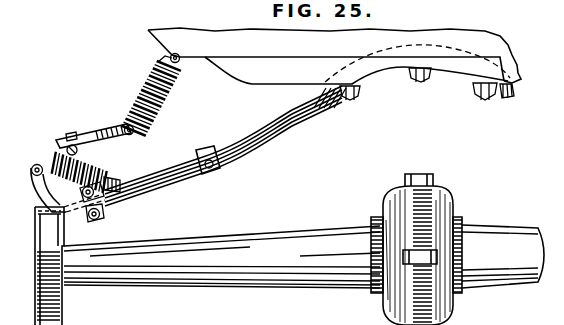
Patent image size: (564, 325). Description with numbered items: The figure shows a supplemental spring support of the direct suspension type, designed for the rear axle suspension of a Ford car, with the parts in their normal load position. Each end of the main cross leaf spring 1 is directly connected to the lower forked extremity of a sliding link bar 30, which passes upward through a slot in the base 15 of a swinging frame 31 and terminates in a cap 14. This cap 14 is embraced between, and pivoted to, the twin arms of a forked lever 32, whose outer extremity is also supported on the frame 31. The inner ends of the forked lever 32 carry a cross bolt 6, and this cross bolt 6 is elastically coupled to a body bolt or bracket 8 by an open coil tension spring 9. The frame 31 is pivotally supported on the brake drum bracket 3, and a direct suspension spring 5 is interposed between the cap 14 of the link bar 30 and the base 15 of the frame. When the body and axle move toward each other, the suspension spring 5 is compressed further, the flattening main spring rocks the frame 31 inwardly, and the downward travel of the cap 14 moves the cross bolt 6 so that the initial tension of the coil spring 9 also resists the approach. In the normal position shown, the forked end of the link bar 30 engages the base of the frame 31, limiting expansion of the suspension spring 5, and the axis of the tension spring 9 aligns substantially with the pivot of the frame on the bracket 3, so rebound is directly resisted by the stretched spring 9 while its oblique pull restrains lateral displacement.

The main cross leaf spring 1 is at (313, 109).
The brake drum bracket 3 is at (70, 214).
The direct suspension spring 5 is at (112, 160).
The cross bolt 6 is at (137, 131).
The body bolt or bracket 8 is at (178, 54).
The open coil tension spring 9 is at (170, 104).
The cap 14 is at (72, 133).
The base 15 is at (148, 190).
The sliding link bar 30 is at (101, 215).
The frame 31 is at (55, 197).
The forked lever 32 is at (112, 85).